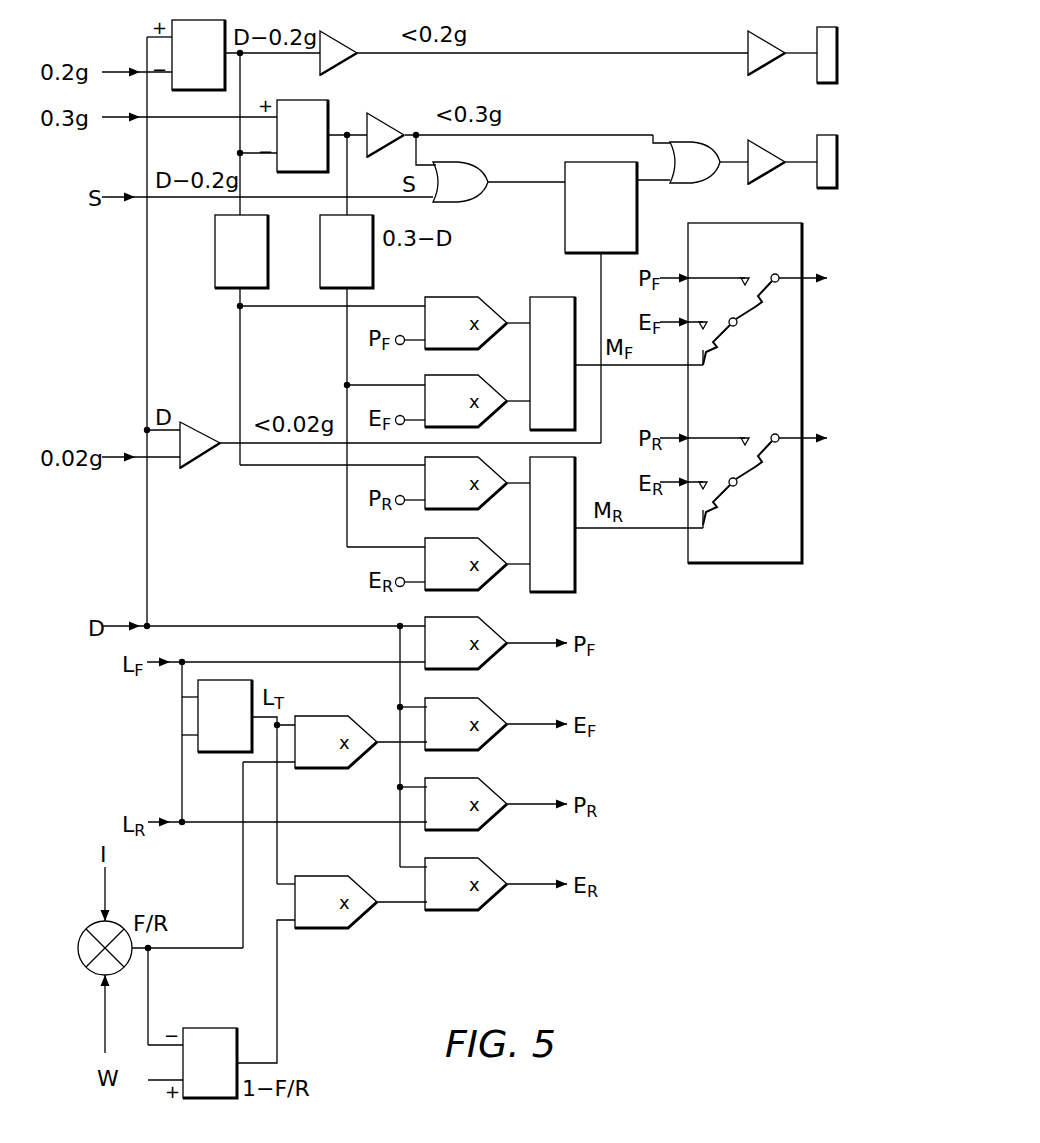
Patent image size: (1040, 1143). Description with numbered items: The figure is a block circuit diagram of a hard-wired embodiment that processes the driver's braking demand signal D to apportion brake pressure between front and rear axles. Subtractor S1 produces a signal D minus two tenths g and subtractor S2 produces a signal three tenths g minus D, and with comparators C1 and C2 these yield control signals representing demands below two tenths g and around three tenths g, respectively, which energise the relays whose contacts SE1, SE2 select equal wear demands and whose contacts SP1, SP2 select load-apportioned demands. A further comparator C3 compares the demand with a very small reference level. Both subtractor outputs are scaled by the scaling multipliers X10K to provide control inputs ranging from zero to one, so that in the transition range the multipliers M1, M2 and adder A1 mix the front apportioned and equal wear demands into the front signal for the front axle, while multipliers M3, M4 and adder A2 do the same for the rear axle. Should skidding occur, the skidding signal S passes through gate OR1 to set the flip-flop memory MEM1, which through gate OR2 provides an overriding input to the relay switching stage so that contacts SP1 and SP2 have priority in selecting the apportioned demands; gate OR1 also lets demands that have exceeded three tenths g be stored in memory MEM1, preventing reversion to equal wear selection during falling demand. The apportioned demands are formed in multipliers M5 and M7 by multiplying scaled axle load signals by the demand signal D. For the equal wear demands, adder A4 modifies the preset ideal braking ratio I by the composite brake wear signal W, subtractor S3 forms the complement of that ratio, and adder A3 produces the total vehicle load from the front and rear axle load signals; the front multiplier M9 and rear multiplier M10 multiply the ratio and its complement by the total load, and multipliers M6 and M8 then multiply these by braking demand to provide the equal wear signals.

The subtractor S1 is at (198, 55).
The subtractor S2 is at (302, 136).
The subtractor S3 is at (210, 1063).
The comparator C1 is at (338, 41).
The comparator C2 is at (385, 122).
The comparator C3 is at (202, 458).
The gate OR1 is at (460, 182).
The gate OR2 is at (695, 162).
The flip-flop memory MEM1 is at (601, 207).
The scaling multiplier X10K is at (294, 251).
The multiplier M1 is at (466, 323).
The multiplier M2 is at (466, 401).
The multiplier M3 is at (466, 483).
The multiplier M4 is at (466, 564).
The multiplier M5 is at (466, 643).
The multiplier M6 is at (466, 724).
The multiplier M7 is at (466, 804).
The multiplier M8 is at (466, 884).
The front multiplier M9 is at (336, 742).
The rear multiplier M10 is at (336, 902).
The adder A1 is at (552, 363).
The adder A2 is at (552, 524).
The adder A3 is at (225, 716).
The adder A4 is at (110, 964).
The relay contact SP1 is at (743, 300).
The relay contact SP2 is at (743, 463).
The relay contact SE1 is at (737, 358).
The relay contact SE2 is at (737, 523).